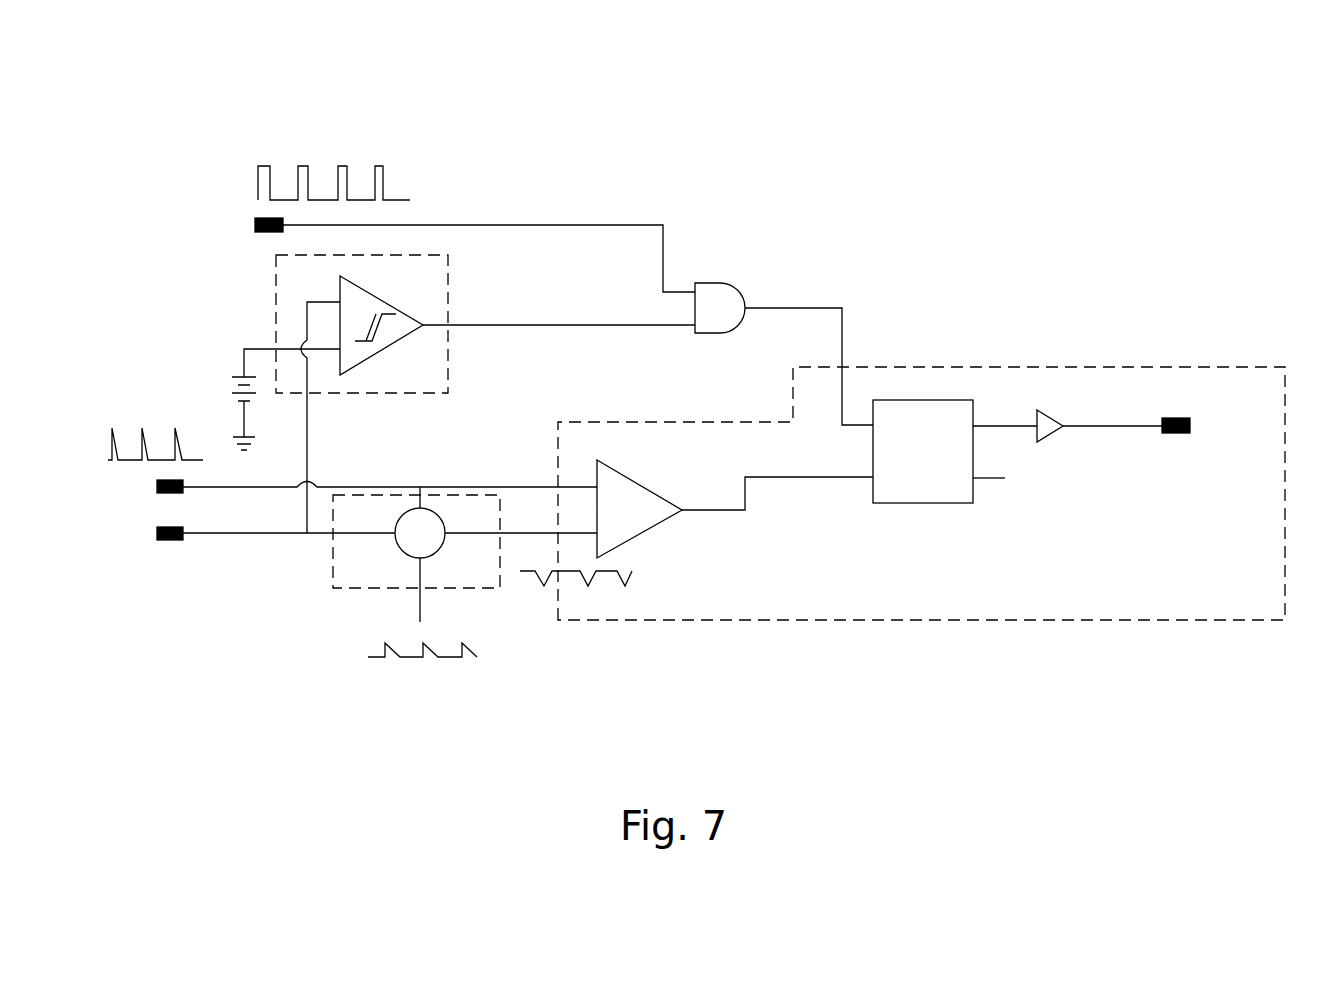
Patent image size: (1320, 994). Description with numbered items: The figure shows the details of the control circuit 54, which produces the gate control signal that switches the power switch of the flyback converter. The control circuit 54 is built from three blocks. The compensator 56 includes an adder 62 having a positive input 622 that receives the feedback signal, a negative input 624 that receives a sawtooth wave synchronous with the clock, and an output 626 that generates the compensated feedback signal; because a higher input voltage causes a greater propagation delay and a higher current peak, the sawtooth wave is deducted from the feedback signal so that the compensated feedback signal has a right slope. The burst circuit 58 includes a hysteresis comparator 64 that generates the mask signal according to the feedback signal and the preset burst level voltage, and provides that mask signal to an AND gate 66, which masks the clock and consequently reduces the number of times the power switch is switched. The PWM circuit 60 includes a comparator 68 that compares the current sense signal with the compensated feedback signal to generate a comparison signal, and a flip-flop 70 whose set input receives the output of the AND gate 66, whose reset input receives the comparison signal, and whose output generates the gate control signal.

The control circuit 54 is at (1218, 217).
The compensator 56 is at (333, 552).
The burst circuit 58 is at (275, 288).
The PWM circuit 60 is at (1036, 367).
The adder 62 is at (421, 488).
The positive input 622 is at (358, 528).
The negative input 624 is at (417, 573).
The output 626 is at (492, 528).
The hysteresis comparator 64 is at (383, 295).
The AND gate 66 is at (718, 283).
The comparator 68 is at (640, 480).
The flip-flop 70 is at (920, 503).